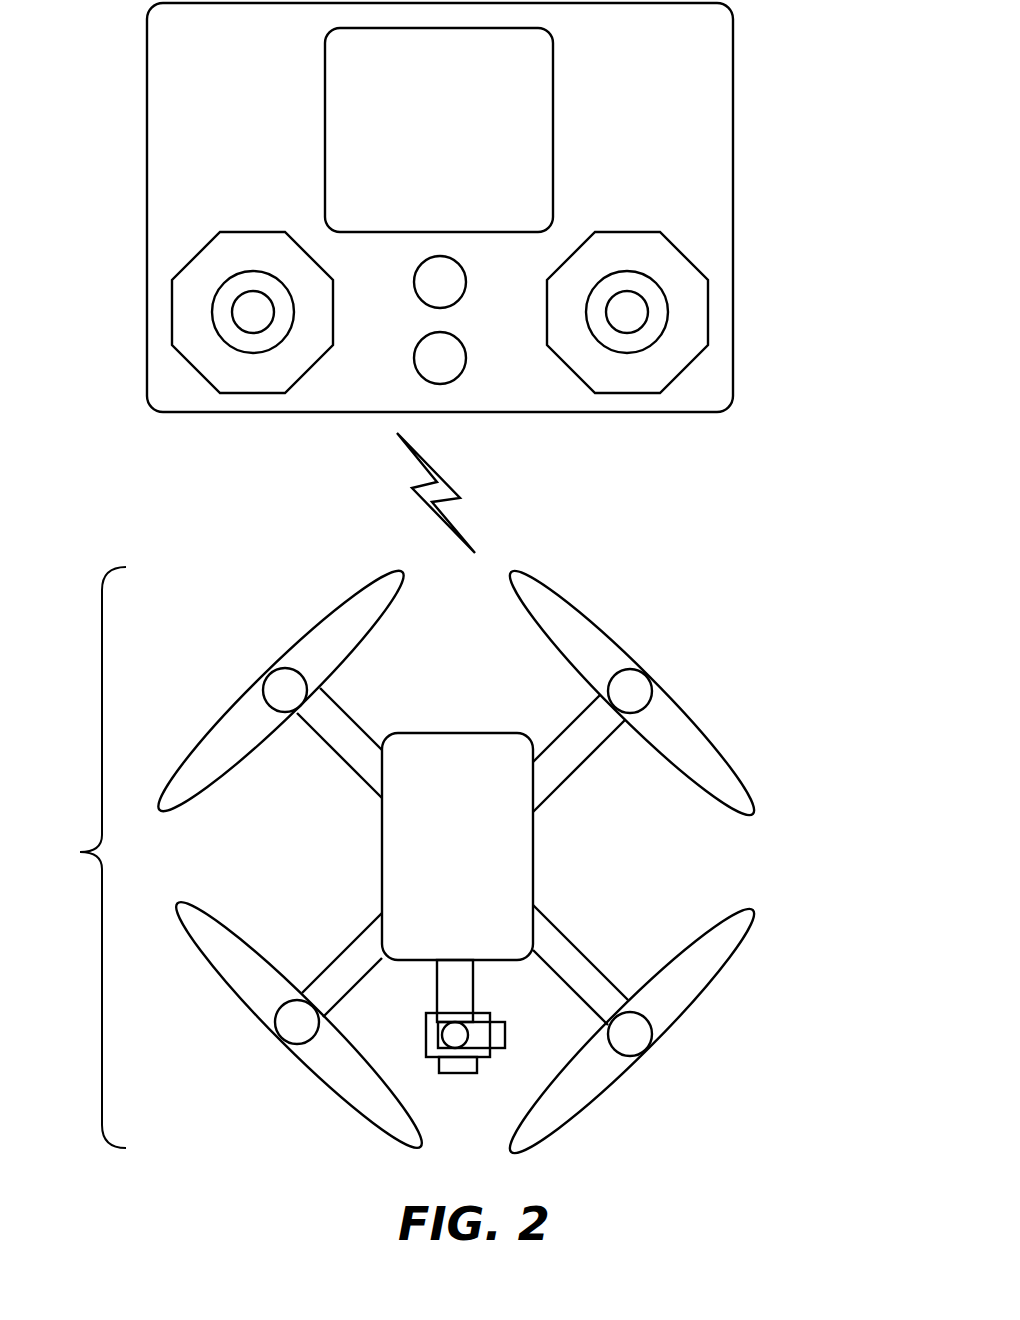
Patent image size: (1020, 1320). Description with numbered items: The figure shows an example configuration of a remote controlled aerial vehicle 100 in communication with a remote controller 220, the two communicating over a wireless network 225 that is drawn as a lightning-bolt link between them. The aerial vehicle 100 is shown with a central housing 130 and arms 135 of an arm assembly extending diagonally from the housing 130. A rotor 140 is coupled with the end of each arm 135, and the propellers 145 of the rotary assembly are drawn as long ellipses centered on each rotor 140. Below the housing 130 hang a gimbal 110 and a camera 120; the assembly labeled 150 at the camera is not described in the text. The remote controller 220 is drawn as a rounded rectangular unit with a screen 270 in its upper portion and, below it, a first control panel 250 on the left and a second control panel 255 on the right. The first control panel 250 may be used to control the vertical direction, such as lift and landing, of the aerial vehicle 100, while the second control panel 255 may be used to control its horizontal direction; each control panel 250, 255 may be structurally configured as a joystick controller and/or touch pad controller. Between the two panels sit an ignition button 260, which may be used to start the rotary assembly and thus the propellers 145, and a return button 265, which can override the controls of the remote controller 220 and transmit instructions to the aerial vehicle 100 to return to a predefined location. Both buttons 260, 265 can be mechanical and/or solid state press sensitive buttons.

The aerial vehicle 100 is at (425, 862).
The gimbal 110 is at (455, 981).
The camera 120 is at (472, 1063).
The housing 130 is at (457, 846).
The arms 135 is at (357, 752).
The rotor 140 is at (285, 690).
The propellers 145 is at (342, 640).
The camera 150 is at (426, 1040).
The remote controller 220 is at (707, 128).
The wireless network 225 is at (455, 493).
The first control panel 250 is at (253, 311).
The second control panel 255 is at (627, 312).
The ignition button 260 is at (438, 282).
The return button 265 is at (438, 358).
The screen 270 is at (439, 130).